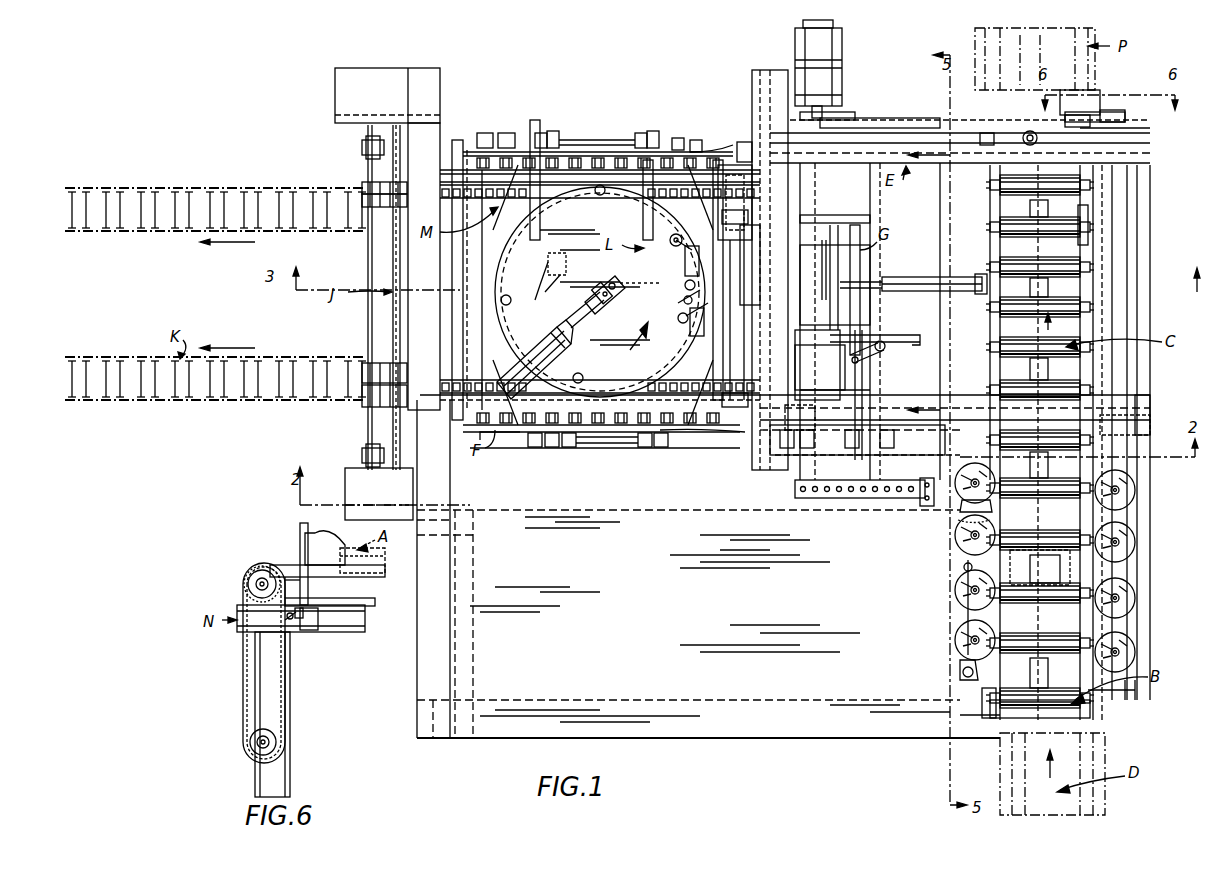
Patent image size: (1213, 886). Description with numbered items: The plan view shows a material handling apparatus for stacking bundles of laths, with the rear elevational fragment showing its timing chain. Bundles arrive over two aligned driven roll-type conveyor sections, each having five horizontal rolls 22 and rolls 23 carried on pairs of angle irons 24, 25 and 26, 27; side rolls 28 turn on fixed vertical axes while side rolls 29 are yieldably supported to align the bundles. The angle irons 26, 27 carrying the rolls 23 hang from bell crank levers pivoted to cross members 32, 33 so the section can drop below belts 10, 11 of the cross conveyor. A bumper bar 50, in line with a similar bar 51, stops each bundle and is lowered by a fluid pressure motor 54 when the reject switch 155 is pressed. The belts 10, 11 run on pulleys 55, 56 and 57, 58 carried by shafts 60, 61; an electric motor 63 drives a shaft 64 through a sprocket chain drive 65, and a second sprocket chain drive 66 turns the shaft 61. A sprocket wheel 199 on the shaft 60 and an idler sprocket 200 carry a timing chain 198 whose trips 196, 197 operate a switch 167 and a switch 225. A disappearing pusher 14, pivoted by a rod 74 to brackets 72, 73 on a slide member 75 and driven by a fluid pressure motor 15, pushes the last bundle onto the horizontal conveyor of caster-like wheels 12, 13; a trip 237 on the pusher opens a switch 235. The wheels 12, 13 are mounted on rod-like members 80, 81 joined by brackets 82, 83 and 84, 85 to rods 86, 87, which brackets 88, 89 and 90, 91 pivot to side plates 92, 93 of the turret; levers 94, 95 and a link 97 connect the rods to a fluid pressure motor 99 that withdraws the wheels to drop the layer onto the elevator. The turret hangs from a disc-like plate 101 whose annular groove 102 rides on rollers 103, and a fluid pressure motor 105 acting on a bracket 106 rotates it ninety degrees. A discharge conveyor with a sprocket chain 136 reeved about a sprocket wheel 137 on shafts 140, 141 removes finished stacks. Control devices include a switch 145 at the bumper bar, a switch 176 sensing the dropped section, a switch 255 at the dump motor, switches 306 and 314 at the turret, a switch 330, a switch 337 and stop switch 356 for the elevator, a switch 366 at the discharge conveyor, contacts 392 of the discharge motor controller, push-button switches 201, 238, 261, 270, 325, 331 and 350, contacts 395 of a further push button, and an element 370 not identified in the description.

In FIG. 1, the belt 10 is at (960, 418).
In FIG. 1, the belt 11 is at (940, 170).
In FIG. 6, the belt 11 is at (290, 565).
In FIG. 1, the caster-like wheel 12 is at (738, 438).
In FIG. 1, the caster-like wheel 13 is at (716, 142).
In FIG. 1, the disappearing pusher 14 is at (818, 268).
In FIG. 1, the fluid pressure motor 15 is at (912, 275).
In FIG. 1, the horizontal roll 22 is at (1060, 530).
In FIG. 1, the horizontal roll 23 is at (1025, 262).
In FIG. 1, the angle iron 24 is at (990, 712).
In FIG. 1, the angle iron 25 is at (1095, 625).
In FIG. 1, the angle iron 26 is at (995, 368).
In FIG. 1, the angle iron 27 is at (1085, 290).
In FIG. 1, the edge roll 28 is at (1137, 495).
In FIG. 1, the edge roll 29 is at (960, 475).
In FIG. 1, the cross member 32 is at (1110, 305).
In FIG. 1, the cross member 33 is at (985, 350).
In FIG. 1, the bumper bar 50 is at (1010, 133).
In FIG. 6, the bumper bar 50 is at (310, 540).
In FIG. 1, the bar 51 is at (890, 128).
In FIG. 1, the fluid pressure motor 54 is at (1030, 132).
In FIG. 1, the pulley 55 is at (1148, 400).
In FIG. 1, the pulley 56 is at (805, 410).
In FIG. 1, the pulley 57 is at (1148, 160).
In FIG. 1, the pulley 58 is at (800, 170).
In FIG. 1, the shaft 60 is at (1137, 320).
In FIG. 1, the shaft 61 is at (803, 198).
In FIG. 1, the electric motor 63 is at (843, 52).
In FIG. 1, the shaft 64 is at (866, 402).
In FIG. 1, the sprocket chain drive 65 is at (830, 115).
In FIG. 1, the sprocket chain drive 66 is at (820, 458).
In FIG. 1, the bracket 72 is at (820, 367).
In FIG. 1, the bracket 73 is at (800, 230).
In FIG. 1, the rod 74 is at (788, 326).
In FIG. 1, the slide member 75 is at (862, 266).
In FIG. 1, the rod-like member 80 is at (710, 438).
In FIG. 1, the rod-like member 81 is at (697, 140).
In FIG. 1, the bracket 82 is at (662, 448).
In FIG. 1, the bracket 83 is at (551, 448).
In FIG. 1, the bracket 84 is at (658, 131).
In FIG. 1, the bracket 85 is at (545, 133).
In FIG. 1, the rod 86 is at (610, 445).
In FIG. 1, the rod 87 is at (590, 140).
In FIG. 1, the bracket 88 is at (645, 448).
In FIG. 1, the bracket 89 is at (568, 448).
In FIG. 1, the bracket 90 is at (642, 133).
In FIG. 1, the bracket 91 is at (560, 131).
In FIG. 1, the side plate 92 is at (683, 440).
In FIG. 1, the side plate 93 is at (680, 138).
In FIG. 1, the lever 94 is at (535, 450).
In FIG. 1, the lever 95 is at (532, 122).
In FIG. 6, the lever 95 is at (255, 568).
In FIG. 1, the link 97 is at (600, 292).
In FIG. 1, the fluid pressure motor 99 is at (540, 330).
In FIG. 1, the disc-like plate 101 is at (640, 285).
In FIG. 1, the annular groove 102 is at (665, 232).
In FIG. 1, the roller 103 is at (600, 195).
In FIG. 1, the fluid pressure motor 105 is at (552, 345).
In FIG. 1, the bracket 106 is at (680, 300).
In FIG. 1, the sprocket chain 136 is at (665, 242).
In FIG. 1, the sprocket wheel 137 is at (378, 405).
In FIG. 1, the shaft 140 is at (748, 318).
In FIG. 1, the shaft 141 is at (395, 250).
In FIG. 1, the switch 145 is at (1085, 215).
In FIG. 1, the reject switch 155 is at (803, 499).
In FIG. 1, the switch 167 is at (1090, 100).
In FIG. 6, the switch 167 is at (320, 622).
In FIG. 1, the switch 176 is at (1100, 243).
In FIG. 6, the trip 196 is at (243, 675).
In FIG. 1, the trip 197 is at (1118, 118).
In FIG. 6, the trip 197 is at (292, 630).
In FIG. 6, the timing chain 198 is at (243, 703).
In FIG. 6, the sprocket wheel 199 is at (248, 587).
In FIG. 6, the idler sprocket 200 is at (250, 744).
In FIG. 1, the push-button switch 201 is at (815, 500).
In FIG. 1, the switch 225 is at (1070, 126).
In FIG. 1, the switch 235 is at (855, 372).
In FIG. 1, the trip 237 is at (912, 334).
In FIG. 1, the push-button switch 238 is at (827, 500).
In FIG. 1, the switch 255 is at (560, 258).
In FIG. 1, the push button switch 261 is at (839, 500).
In FIG. 1, the counter start push button switch 270 is at (851, 500).
In FIG. 1, the switch 306 is at (688, 324).
In FIG. 1, the switch 314 is at (685, 262).
In FIG. 1, the reset push button switch 325 is at (863, 500).
In FIG. 1, the switch 330 is at (744, 142).
In FIG. 1, the push button switch 331 is at (875, 500).
In FIG. 1, the switch 337 is at (508, 133).
In FIG. 1, the push button switch 350 is at (887, 500).
In FIG. 1, the elevator motor stop switch 356 is at (899, 500).
In FIG. 1, the switch 366 is at (500, 445).
In FIG. 1, the cam 370 is at (480, 133).
In FIG. 1, the contacts 392 is at (911, 500).
In FIG. 1, the contacts 395 is at (924, 501).